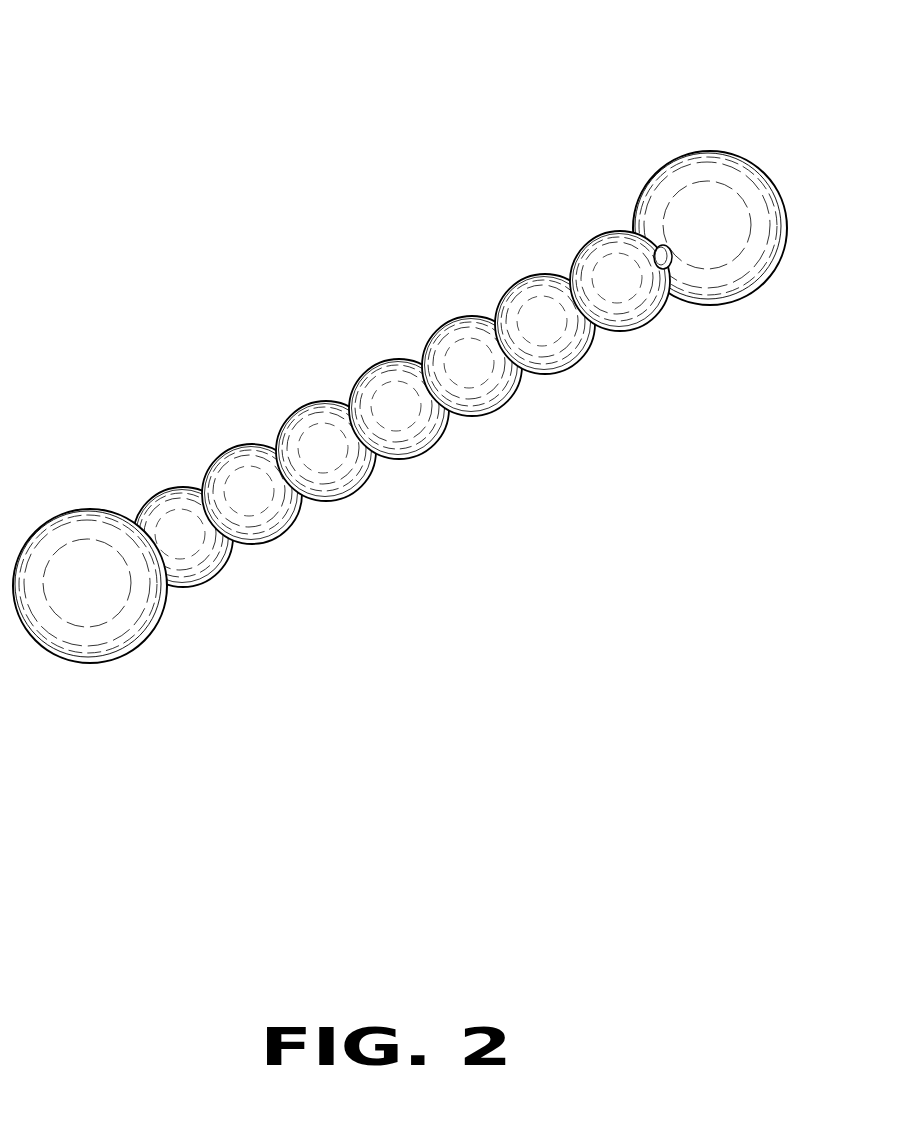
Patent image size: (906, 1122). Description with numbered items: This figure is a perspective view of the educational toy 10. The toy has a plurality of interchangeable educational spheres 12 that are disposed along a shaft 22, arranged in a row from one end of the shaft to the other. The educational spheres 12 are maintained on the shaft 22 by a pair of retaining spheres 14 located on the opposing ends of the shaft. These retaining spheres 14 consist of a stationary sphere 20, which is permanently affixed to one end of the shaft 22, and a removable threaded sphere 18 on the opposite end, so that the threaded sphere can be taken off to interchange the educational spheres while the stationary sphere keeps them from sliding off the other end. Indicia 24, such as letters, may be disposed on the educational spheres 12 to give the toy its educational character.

The educational toy 10 is at (400, 364).
The interchangeable educational spheres 12 is at (402, 415).
The retaining spheres 14 is at (400, 439).
The removable threaded sphere 18 is at (687, 215).
The stationary sphere 20 is at (102, 640).
The shaft 22 is at (228, 512).
The indicia 24 is at (485, 385).